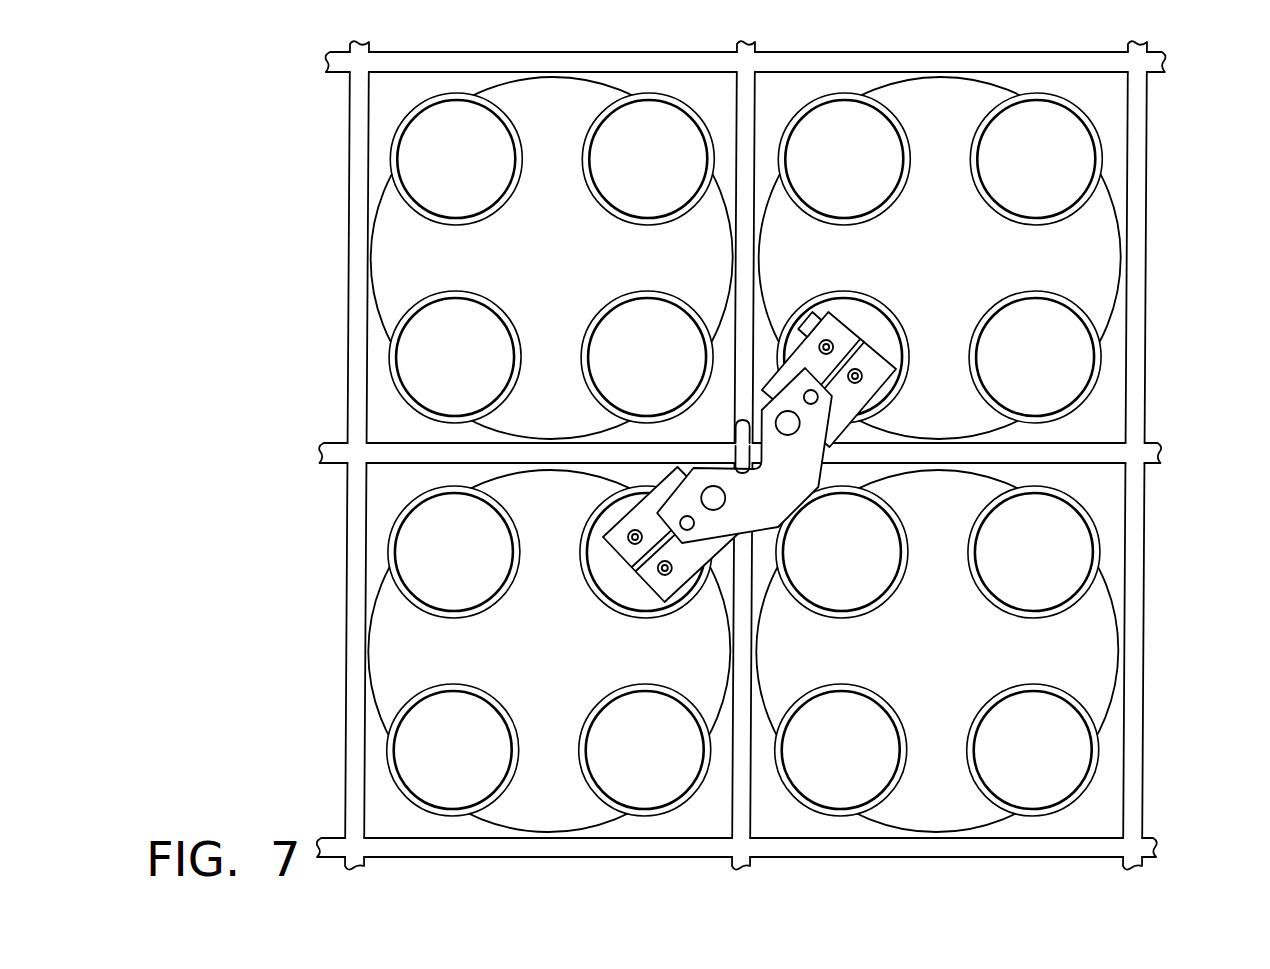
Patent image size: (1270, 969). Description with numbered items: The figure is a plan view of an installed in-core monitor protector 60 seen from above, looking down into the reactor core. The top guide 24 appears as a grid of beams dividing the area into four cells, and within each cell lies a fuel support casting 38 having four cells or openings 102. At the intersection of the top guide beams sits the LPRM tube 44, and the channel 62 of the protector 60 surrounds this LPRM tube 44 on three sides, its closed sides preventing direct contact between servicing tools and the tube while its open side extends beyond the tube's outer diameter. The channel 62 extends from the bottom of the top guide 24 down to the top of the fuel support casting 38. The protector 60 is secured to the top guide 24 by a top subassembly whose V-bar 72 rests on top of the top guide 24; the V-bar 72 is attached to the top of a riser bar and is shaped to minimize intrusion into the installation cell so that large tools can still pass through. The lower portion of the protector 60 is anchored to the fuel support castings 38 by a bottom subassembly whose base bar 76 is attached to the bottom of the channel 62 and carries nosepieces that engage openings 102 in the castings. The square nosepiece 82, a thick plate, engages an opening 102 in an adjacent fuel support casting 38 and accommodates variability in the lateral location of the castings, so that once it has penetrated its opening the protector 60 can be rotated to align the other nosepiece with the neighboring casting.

The top guide 24 is at (1154, 127).
The fuel support casting 38 is at (360, 325).
The LPRM tube 44 is at (735, 443).
The protector 60 is at (784, 453).
The channel 62 is at (742, 418).
The V-bar 72 is at (794, 488).
The base bar 76 is at (880, 368).
The square nosepiece 82 is at (801, 325).
The cell or opening 102 is at (870, 322).